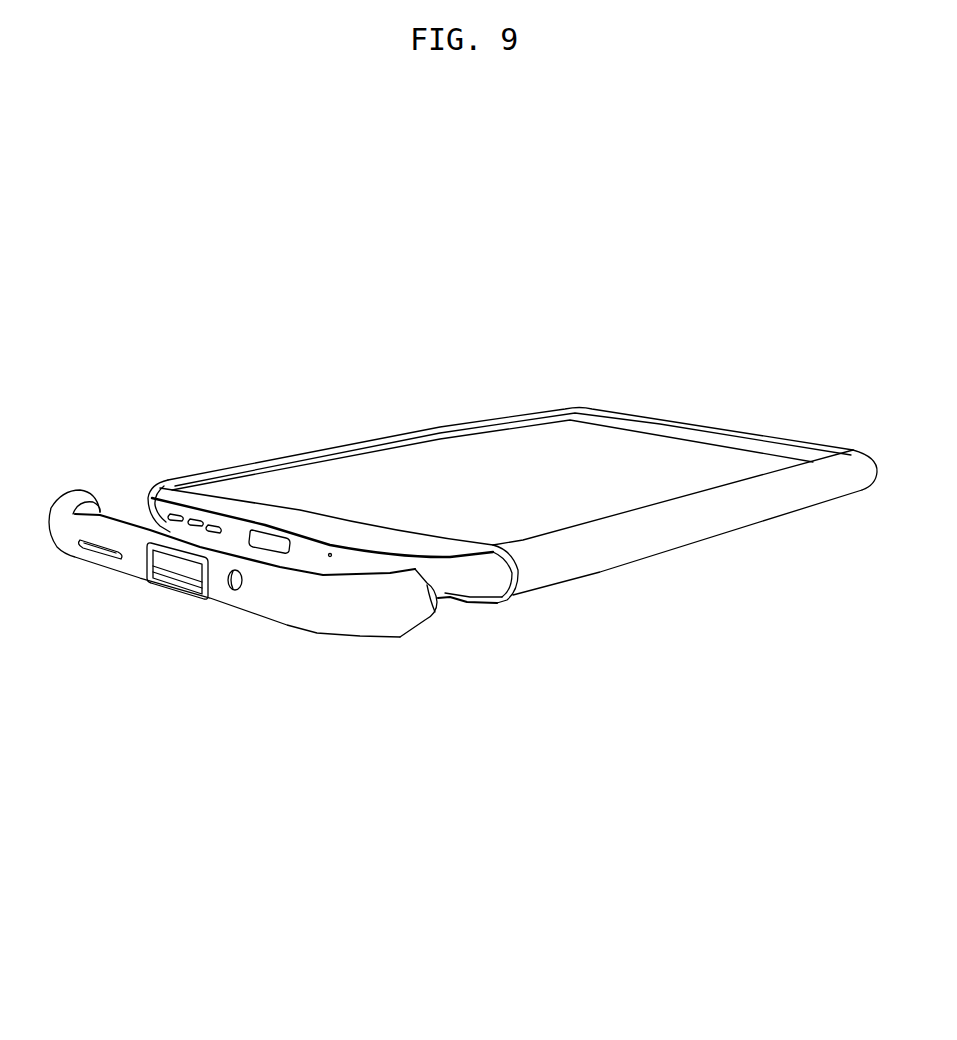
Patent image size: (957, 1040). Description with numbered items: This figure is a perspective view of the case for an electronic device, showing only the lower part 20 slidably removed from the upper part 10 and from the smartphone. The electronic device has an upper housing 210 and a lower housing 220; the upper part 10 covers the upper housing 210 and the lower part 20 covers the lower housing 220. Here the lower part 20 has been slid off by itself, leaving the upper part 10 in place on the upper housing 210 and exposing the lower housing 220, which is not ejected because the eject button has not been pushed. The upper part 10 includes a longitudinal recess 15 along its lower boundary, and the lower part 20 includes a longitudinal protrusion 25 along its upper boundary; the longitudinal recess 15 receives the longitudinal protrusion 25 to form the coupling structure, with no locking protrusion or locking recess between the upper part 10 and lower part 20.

The upper part 10 is at (663, 517).
The longitudinal recess 15 is at (497, 592).
The lower part 20 is at (287, 605).
The longitudinal protrusion 25 is at (437, 605).
The upper housing 210 is at (308, 480).
The lower housing 220 is at (177, 490).